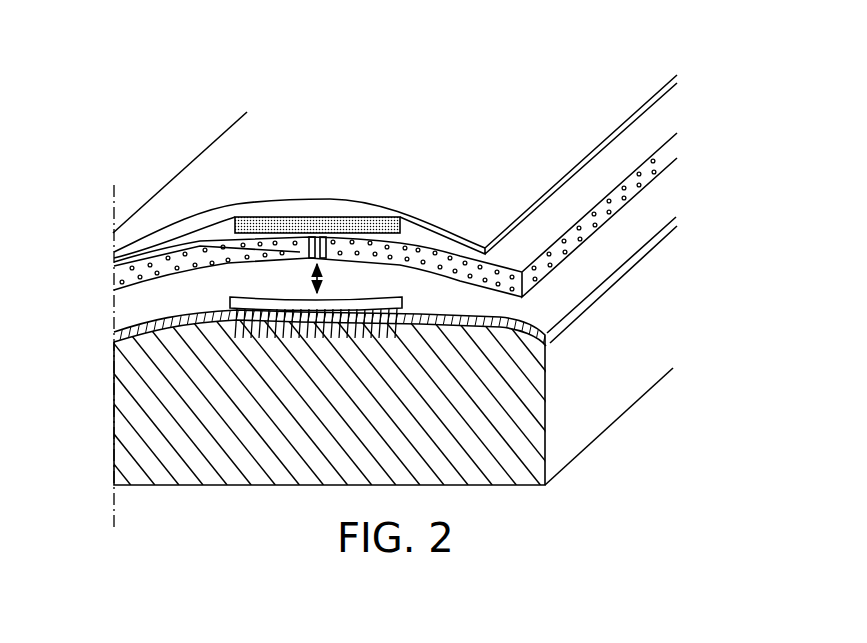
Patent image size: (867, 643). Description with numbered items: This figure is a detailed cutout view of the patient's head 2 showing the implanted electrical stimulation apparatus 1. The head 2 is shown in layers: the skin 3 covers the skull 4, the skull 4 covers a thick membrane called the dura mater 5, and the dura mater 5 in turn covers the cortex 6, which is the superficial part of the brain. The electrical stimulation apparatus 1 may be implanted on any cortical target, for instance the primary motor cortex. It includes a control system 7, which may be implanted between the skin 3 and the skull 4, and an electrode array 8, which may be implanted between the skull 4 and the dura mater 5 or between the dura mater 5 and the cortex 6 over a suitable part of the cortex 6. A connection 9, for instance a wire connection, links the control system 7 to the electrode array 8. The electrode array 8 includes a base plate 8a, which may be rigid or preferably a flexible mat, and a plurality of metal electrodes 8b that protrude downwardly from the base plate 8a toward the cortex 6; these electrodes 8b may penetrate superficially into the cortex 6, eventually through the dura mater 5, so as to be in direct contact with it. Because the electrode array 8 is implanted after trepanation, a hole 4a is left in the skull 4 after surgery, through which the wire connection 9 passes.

The electrical stimulation apparatus 1 is at (336, 212).
The head 2 is at (187, 151).
The skin 3 is at (677, 82).
The skull 4 is at (667, 150).
The hole 4a is at (310, 261).
The dura mater 5 is at (675, 225).
The cortex 6 is at (687, 226).
The control system 7 is at (280, 226).
The electrode array 8 is at (399, 285).
The base plate 8a is at (363, 303).
The electrode 8b is at (287, 337).
The connection 9 is at (302, 253).